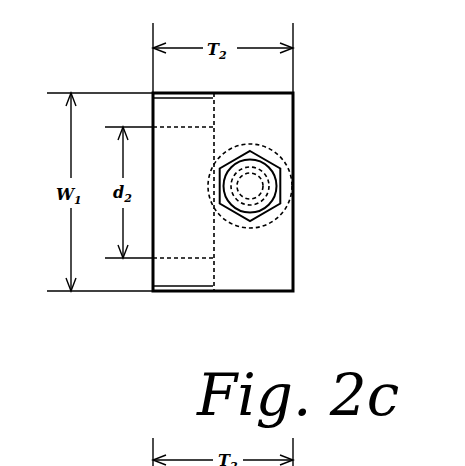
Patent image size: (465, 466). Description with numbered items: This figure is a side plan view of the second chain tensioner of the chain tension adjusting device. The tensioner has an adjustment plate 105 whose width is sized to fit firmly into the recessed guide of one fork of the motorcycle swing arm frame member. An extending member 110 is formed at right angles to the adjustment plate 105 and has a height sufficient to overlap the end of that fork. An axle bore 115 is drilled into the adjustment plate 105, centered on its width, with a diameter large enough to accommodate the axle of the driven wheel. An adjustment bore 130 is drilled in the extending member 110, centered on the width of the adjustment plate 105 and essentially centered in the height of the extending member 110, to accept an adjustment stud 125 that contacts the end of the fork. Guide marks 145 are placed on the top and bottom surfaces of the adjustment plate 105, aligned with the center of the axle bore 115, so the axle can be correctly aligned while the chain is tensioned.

The adjustment plate 105 is at (288, 292).
The extending member 110 is at (216, 268).
The axle bore 115 is at (192, 257).
The adjustment stud 125 is at (272, 214).
The adjustment bore 130 is at (279, 147).
The guide marks 145 is at (183, 97).